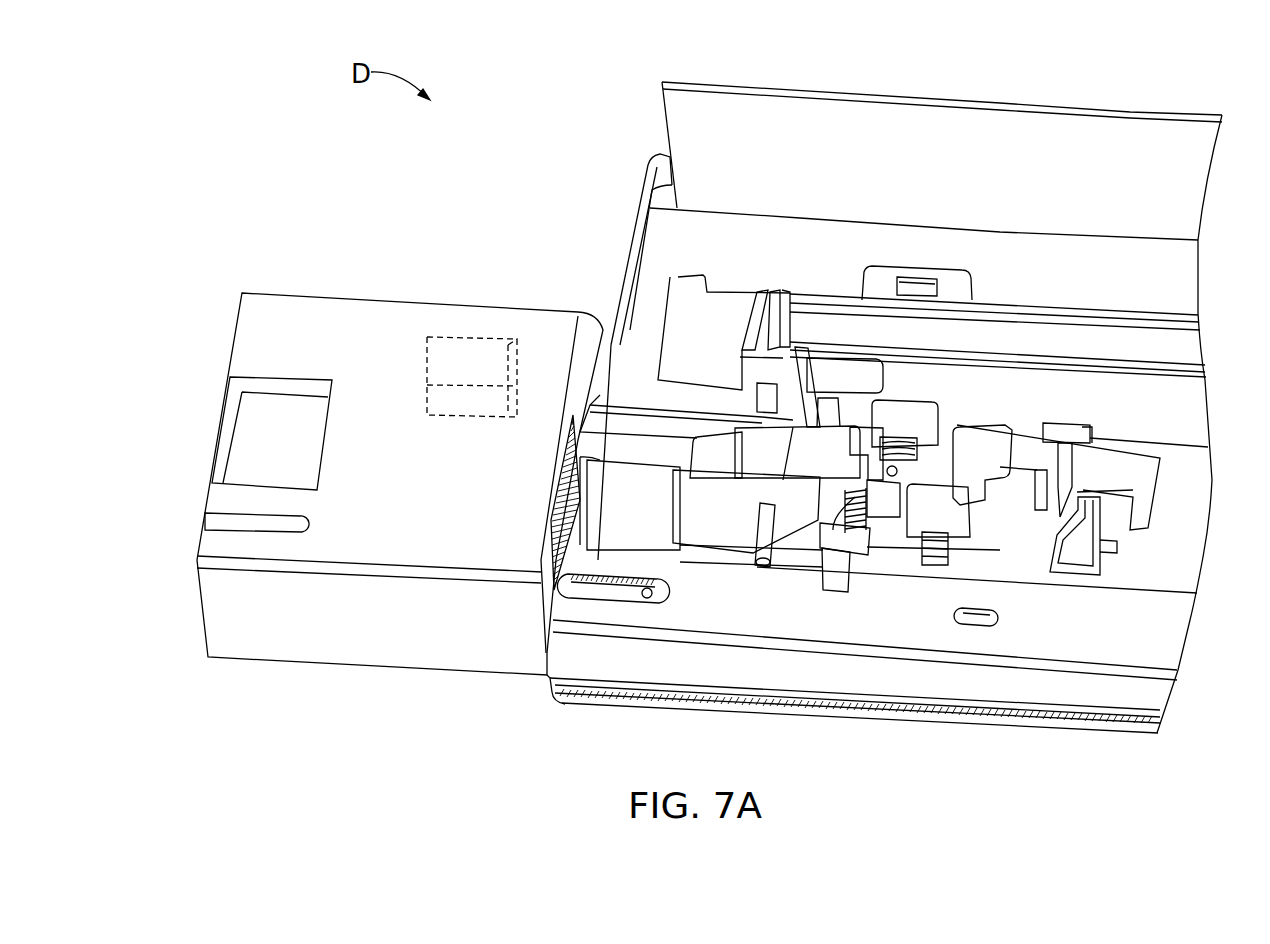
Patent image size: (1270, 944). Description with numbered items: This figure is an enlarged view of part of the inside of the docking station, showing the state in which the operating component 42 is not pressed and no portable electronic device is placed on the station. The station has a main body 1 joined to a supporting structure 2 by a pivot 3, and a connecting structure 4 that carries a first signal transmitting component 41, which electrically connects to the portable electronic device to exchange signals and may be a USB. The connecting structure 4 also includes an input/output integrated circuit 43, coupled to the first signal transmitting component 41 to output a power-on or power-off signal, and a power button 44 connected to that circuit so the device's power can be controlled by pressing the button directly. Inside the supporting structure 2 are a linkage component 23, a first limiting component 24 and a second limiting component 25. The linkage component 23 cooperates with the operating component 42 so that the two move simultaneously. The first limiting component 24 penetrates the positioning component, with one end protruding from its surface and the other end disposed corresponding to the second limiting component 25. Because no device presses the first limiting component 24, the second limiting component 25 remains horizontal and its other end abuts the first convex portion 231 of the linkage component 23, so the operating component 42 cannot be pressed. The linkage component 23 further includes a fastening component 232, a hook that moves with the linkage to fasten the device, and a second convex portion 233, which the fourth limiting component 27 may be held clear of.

The main body 1 is at (1163, 145).
The supporting structure 2 is at (1178, 552).
The pivot 3 is at (678, 278).
The connecting structure 4 is at (338, 294).
The first signal transmitting component 41 is at (545, 513).
The operating component 42 is at (240, 437).
The input/output integrated circuit 43 is at (475, 340).
The power button 44 is at (220, 520).
The linkage component 23 is at (1058, 628).
The first convex portion 231 is at (623, 483).
The fastening component 232 is at (837, 575).
The second convex portion 233 is at (1078, 555).
The first limiting component 24 is at (762, 520).
The second limiting component 25 is at (717, 523).
The fourth limiting component 27 is at (1020, 458).